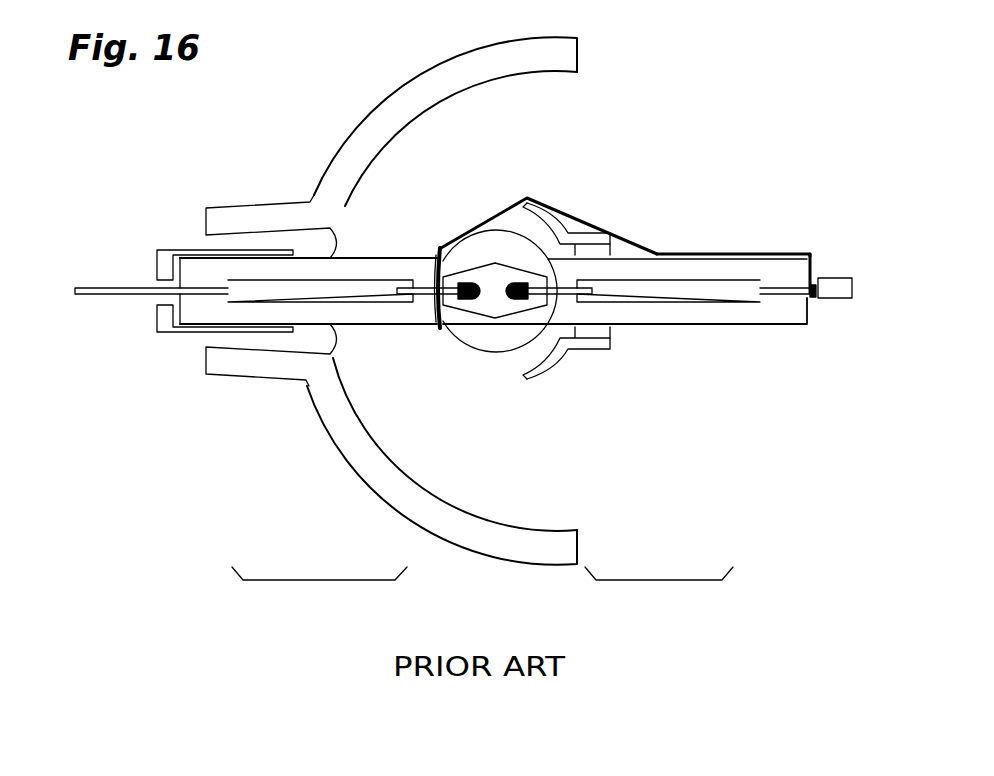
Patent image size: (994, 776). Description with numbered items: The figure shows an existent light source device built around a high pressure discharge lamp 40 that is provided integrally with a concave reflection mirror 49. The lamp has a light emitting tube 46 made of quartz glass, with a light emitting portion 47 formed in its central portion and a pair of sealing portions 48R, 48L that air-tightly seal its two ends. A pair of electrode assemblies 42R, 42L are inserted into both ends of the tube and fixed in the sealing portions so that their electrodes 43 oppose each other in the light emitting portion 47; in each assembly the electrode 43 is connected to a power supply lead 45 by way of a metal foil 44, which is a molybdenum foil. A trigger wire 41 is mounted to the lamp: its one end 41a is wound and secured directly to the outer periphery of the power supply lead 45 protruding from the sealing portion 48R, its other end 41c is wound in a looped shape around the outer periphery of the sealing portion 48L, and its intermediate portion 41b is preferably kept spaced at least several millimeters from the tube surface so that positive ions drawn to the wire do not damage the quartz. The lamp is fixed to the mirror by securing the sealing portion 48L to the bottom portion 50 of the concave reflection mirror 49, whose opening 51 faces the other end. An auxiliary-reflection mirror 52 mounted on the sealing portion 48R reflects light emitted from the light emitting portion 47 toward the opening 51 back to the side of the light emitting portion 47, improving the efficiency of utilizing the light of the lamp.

The high pressure discharge lamp 40 is at (708, 222).
The trigger wire 41 is at (629, 234).
The one end of the trigger wire 41a is at (817, 277).
The intermediate portion of the trigger wire 41b is at (593, 208).
The other end of the trigger wire 41c is at (437, 272).
The electrode assembly 42L is at (319, 593).
The electrode assembly 42R is at (659, 593).
The electrode 43 is at (472, 298).
The metal foil 44 is at (323, 294).
The power supply lead 45 is at (130, 295).
The light emitting tube 46 is at (503, 363).
The light emitting portion 47 is at (495, 235).
The sealing portion 48L is at (212, 265).
The sealing portion 48R is at (747, 268).
The concave reflection mirror 49 is at (410, 65).
The bottom portion of the reflection mirror 50 is at (287, 210).
The opening of the concave reflection mirror 51 is at (575, 88).
The auxiliary-reflection mirror 52 is at (565, 225).